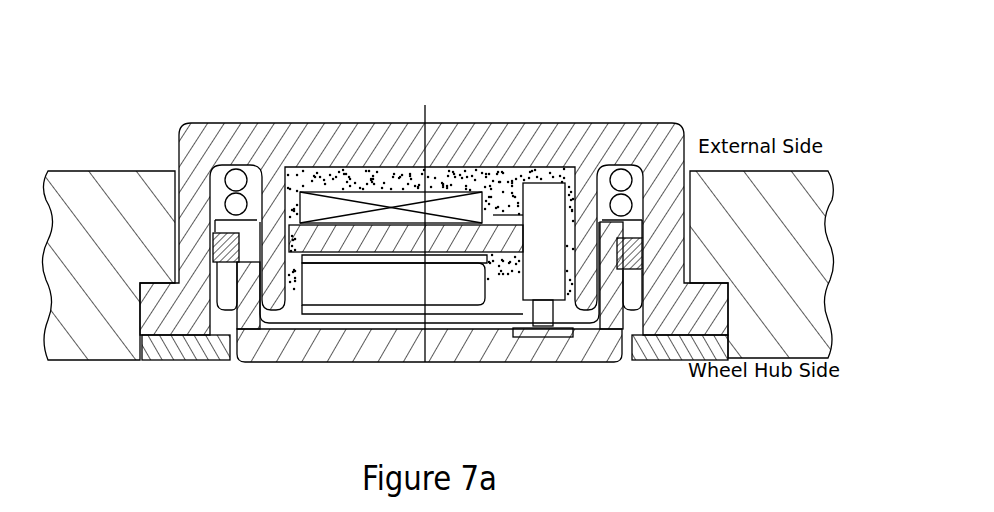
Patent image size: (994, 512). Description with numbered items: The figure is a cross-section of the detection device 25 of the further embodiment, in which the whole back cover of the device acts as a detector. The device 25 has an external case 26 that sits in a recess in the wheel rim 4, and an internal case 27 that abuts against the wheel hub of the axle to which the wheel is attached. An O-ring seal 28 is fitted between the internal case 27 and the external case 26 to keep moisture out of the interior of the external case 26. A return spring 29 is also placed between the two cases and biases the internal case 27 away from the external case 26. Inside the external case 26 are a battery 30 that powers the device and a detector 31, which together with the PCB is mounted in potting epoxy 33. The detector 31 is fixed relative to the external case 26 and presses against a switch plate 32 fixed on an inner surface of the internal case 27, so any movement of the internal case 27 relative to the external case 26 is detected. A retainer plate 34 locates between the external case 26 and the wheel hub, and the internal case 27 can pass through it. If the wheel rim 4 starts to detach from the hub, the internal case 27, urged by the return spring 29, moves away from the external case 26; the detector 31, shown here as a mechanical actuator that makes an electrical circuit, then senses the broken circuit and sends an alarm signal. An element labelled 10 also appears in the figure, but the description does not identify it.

The wheel rim 4 is at (90, 352).
The electric generator 10 is at (455, 203).
The device 25 is at (654, 88).
The external case 26 is at (208, 125).
The internal case 27 is at (340, 352).
The O-ring seal 28 is at (227, 262).
The return spring 29 is at (233, 178).
The battery 30 is at (398, 292).
The detector 31 is at (547, 283).
The switch plate 32 is at (533, 327).
The potting epoxy 33 is at (505, 178).
The retainer plate 34 is at (150, 357).